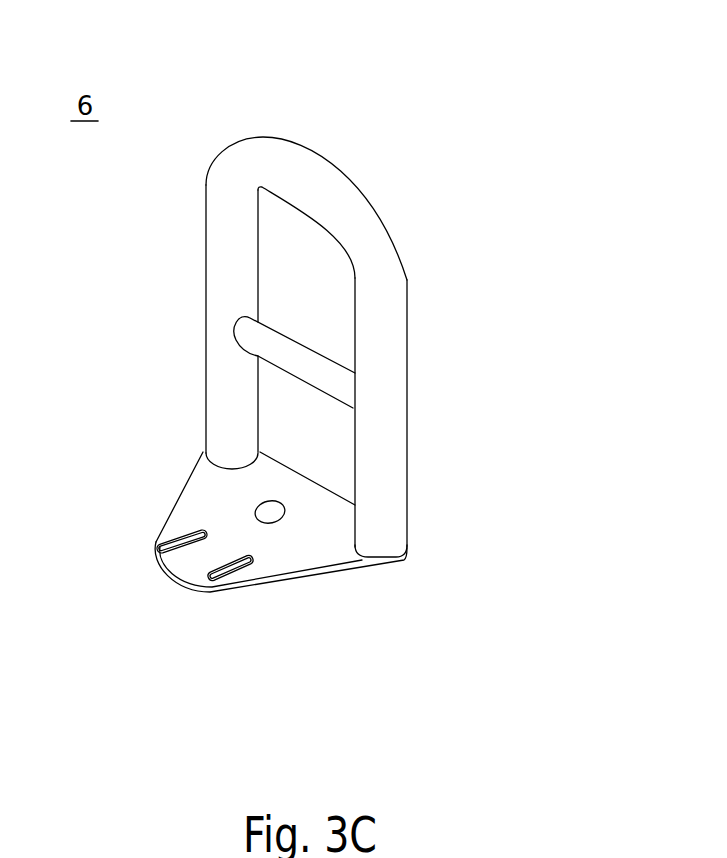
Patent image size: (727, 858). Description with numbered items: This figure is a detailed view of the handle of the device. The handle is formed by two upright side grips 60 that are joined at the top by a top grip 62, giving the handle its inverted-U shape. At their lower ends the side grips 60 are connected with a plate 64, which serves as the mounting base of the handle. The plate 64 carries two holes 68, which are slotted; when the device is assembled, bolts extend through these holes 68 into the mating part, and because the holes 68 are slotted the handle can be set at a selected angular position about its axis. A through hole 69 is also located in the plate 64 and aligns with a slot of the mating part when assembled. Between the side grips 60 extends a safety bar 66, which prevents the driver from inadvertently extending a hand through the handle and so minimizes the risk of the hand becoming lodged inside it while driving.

The side grips 60 is at (206, 260).
The top grip 62 is at (318, 157).
The plate 64 is at (333, 574).
The safety bar 66 is at (287, 365).
The holes 68 is at (180, 537).
The through hole 69 is at (285, 511).